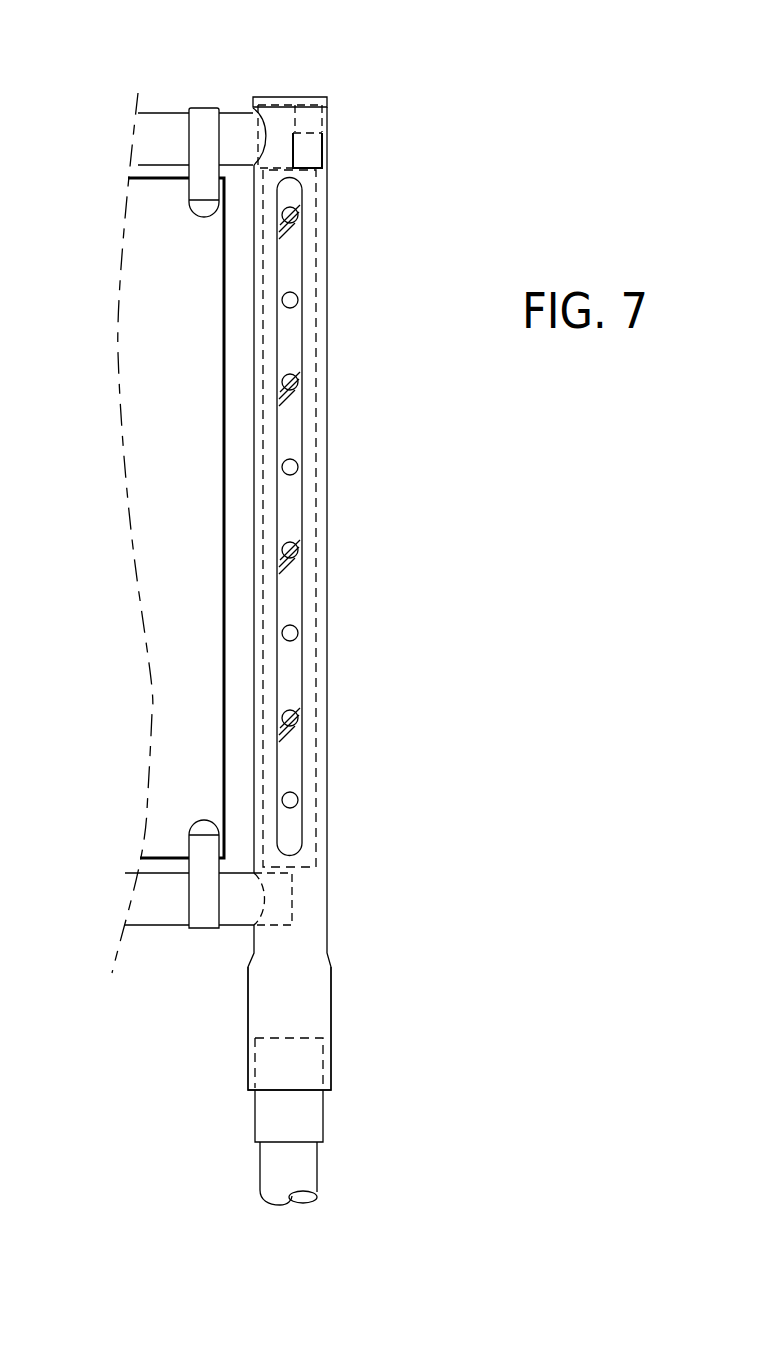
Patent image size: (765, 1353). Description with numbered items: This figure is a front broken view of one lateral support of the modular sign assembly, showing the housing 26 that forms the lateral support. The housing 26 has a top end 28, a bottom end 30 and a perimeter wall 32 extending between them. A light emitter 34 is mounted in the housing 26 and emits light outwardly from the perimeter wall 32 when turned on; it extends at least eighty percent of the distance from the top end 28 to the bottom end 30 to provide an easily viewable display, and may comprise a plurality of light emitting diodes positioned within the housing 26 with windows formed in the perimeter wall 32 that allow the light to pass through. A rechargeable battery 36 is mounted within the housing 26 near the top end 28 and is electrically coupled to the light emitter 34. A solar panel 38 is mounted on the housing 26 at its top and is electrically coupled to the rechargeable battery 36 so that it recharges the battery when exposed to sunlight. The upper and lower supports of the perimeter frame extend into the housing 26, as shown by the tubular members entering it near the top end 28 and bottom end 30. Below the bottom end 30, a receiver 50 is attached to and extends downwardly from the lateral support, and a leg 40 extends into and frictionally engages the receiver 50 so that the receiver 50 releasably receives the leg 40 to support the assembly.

The housing 26 is at (328, 780).
The top end 28 is at (327, 98).
The bottom end 30 is at (327, 872).
The perimeter wall 32 is at (322, 510).
The light emitter 34 is at (295, 452).
The rechargeable battery 36 is at (316, 150).
The solar panel 38 is at (297, 98).
The leg 40 is at (317, 1170).
The receiver 50 is at (323, 1090).